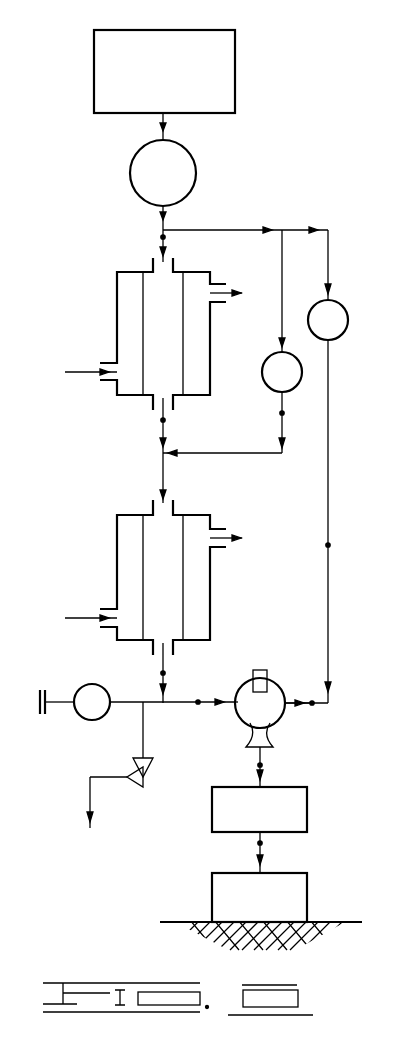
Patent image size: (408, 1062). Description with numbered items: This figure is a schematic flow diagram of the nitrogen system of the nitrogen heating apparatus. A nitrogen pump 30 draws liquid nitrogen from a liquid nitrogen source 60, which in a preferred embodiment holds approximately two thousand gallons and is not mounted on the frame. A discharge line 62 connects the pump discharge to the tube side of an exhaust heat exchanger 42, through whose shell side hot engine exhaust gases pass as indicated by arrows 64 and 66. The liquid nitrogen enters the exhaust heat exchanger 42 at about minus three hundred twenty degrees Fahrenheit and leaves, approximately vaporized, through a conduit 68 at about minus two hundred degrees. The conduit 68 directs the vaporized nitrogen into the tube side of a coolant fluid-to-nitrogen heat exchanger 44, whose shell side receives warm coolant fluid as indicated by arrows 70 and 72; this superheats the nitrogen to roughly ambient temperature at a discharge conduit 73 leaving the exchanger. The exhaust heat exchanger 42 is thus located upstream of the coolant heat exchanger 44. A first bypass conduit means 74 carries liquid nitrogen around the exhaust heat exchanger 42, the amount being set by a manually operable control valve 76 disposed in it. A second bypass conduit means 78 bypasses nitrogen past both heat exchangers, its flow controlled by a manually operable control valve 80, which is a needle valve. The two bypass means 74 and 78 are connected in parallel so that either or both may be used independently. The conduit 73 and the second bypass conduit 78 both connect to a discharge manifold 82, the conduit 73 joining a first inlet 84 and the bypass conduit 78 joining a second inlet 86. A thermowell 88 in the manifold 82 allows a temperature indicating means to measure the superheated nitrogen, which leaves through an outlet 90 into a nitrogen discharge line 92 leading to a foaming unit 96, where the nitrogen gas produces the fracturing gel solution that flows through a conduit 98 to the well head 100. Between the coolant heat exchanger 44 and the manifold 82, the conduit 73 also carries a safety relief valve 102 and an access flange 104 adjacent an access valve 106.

The liquid nitrogen source 60 is at (193, 30).
The nitrogen pump 30 is at (196, 168).
The discharge line 62 is at (160, 237).
The exhaust heat exchanger 42 is at (150, 302).
The arrow 66 is at (227, 291).
The arrow 64 is at (78, 372).
The conduit 68 is at (160, 420).
The manually operable control valve 76 is at (268, 357).
The first bypass conduit means 74 is at (279, 413).
The manually operable control valve 80 is at (341, 308).
The second bypass conduit means 78 is at (331, 545).
The coolant fluid-to-nitrogen heat exchanger 44 is at (147, 540).
The arrow 72 is at (224, 536).
The arrow 70 is at (78, 618).
The discharge conduit 73 is at (166, 674).
The access flange 104 is at (40, 690).
The access valve 106 is at (95, 686).
The safety relief valve 102 is at (133, 784).
The discharge manifold 82 is at (273, 689).
The thermowell 88 is at (260, 668).
The second inlet 86 is at (296, 701).
The first inlet 84 is at (238, 712).
The outlet 90 is at (271, 747).
The nitrogen discharge line 92 is at (263, 765).
The foaming unit 96 is at (307, 799).
The conduit 98 is at (263, 843).
The well head 100 is at (307, 884).